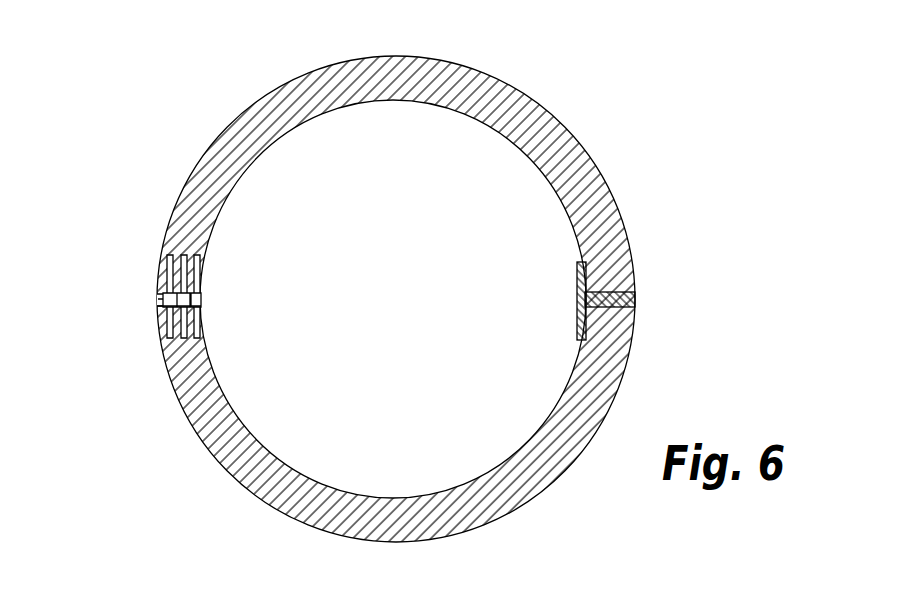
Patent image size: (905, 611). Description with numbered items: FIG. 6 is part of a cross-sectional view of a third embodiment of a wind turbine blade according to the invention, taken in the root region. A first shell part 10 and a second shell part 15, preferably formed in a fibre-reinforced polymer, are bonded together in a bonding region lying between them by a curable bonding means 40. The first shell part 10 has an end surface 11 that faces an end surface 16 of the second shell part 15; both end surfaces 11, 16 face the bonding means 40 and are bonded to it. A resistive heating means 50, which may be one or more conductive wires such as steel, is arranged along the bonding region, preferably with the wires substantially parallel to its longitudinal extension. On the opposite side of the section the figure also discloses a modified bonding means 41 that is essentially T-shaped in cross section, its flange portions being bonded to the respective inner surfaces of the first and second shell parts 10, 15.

The first shell part 10 is at (218, 160).
The end surface 11 is at (158, 300).
The second shell part 15 is at (213, 422).
The end surface 16 is at (201, 300).
The curable bonding means 40 is at (201, 305).
The modified bonding means 41 is at (636, 298).
The resistive heating means 50 is at (174, 256).